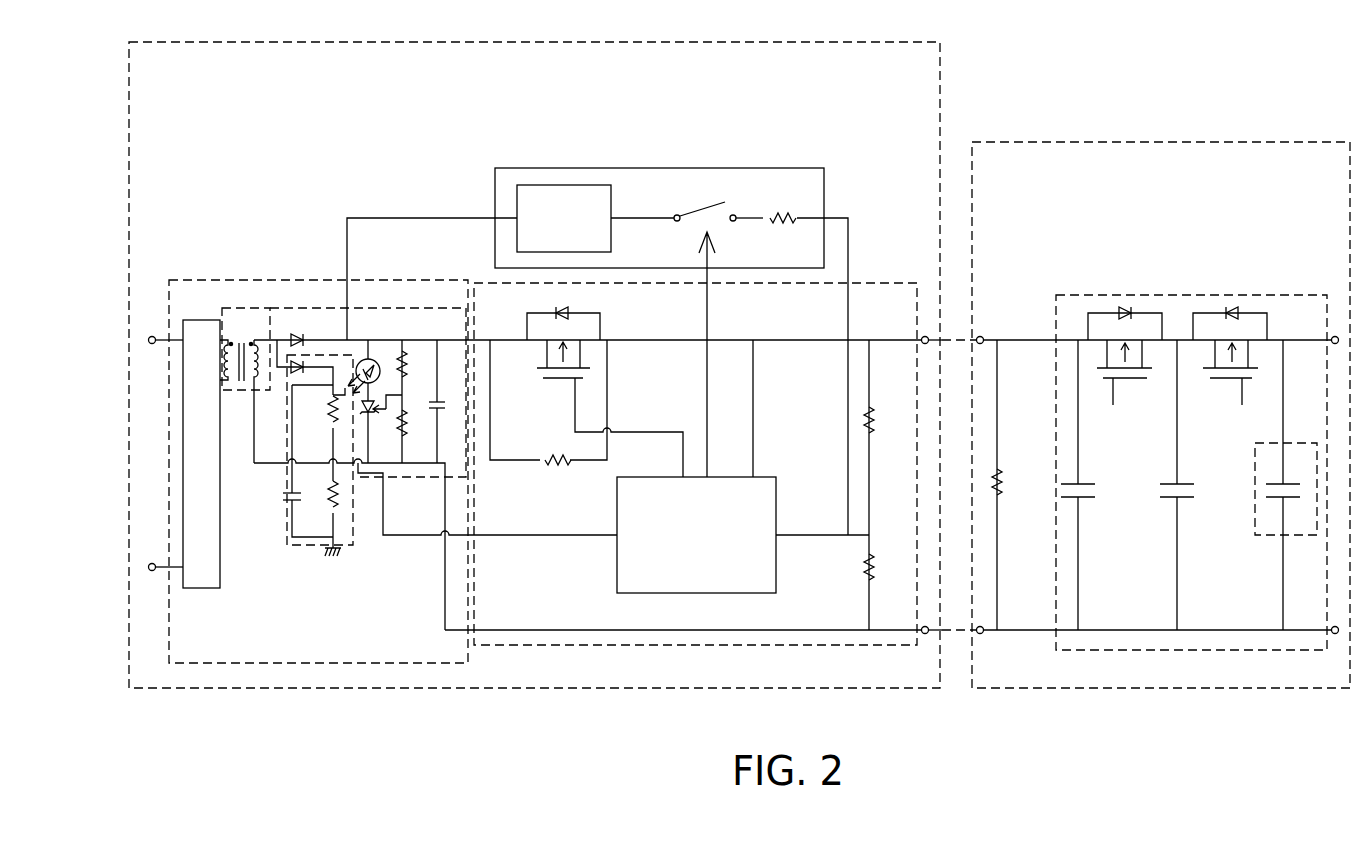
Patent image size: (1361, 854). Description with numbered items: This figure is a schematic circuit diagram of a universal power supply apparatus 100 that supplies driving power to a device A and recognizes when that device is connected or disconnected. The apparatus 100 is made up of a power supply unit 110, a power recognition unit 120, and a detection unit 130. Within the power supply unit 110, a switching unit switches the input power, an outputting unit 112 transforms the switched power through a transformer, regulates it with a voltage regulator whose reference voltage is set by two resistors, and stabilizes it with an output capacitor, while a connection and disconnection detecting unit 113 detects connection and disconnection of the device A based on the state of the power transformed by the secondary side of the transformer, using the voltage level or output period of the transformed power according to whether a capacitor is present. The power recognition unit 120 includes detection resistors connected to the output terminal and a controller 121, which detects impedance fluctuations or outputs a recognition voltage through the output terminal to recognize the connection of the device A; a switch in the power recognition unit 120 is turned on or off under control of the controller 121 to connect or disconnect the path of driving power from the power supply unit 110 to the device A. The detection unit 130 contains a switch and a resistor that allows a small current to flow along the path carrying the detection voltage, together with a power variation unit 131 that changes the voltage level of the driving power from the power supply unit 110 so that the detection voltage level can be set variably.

The universal power supply apparatus 100 is at (938, 92).
The power supply unit 110 is at (213, 280).
The outputting unit 112 is at (280, 308).
The connection and disconnection detecting unit 113 is at (349, 523).
The power recognition unit 120 is at (875, 283).
The controller 121 is at (617, 549).
The detection unit 130 is at (682, 168).
The power variation unit 131 is at (550, 185).
The device A is at (1122, 142).